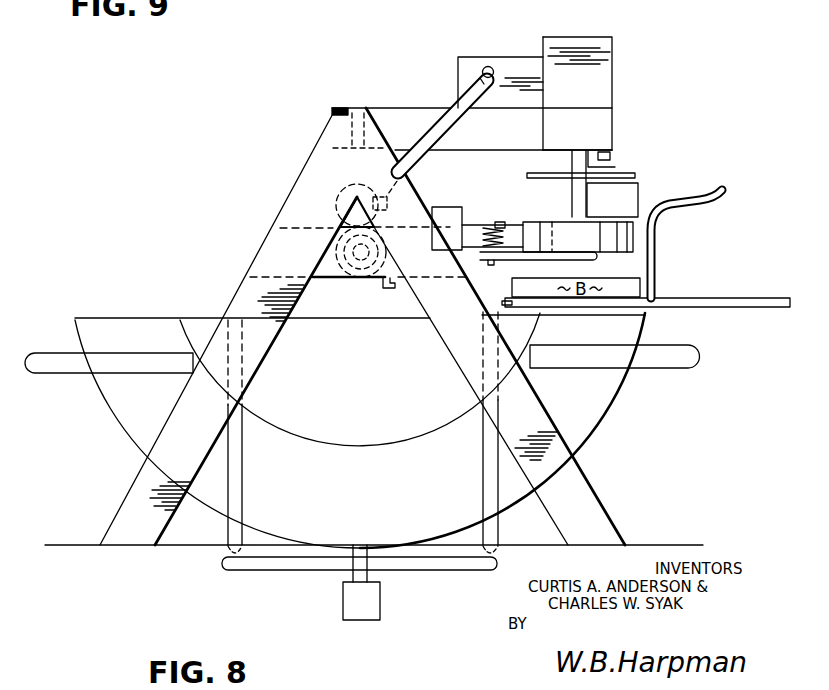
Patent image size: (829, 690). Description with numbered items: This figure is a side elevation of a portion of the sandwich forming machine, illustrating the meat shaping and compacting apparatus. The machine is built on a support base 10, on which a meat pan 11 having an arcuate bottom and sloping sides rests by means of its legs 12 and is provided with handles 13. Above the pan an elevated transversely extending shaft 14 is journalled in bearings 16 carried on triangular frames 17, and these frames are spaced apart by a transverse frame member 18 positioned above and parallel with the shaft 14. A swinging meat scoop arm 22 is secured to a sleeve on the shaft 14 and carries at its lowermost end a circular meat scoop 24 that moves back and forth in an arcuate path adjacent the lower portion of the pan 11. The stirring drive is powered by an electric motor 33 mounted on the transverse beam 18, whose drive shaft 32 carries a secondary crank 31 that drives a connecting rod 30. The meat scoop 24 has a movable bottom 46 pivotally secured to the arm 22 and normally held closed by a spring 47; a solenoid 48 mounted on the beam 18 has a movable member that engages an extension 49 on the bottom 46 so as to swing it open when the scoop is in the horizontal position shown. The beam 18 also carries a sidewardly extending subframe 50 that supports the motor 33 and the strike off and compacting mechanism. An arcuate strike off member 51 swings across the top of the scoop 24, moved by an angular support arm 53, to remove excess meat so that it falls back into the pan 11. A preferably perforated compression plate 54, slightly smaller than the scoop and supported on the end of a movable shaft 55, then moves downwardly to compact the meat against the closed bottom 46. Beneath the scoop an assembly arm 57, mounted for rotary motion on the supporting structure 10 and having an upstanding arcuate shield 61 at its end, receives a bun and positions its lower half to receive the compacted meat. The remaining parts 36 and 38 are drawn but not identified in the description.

The support base 10 is at (108, 548).
The meat pan 11 is at (387, 415).
The legs 12 is at (244, 505).
The handles 13 is at (58, 362).
The shaft 14 is at (336, 250).
The bearings 16 is at (326, 274).
The triangular frames 17 is at (146, 472).
The transverse frame member 18 is at (332, 111).
The arm 22 is at (476, 277).
The meat scoop 24 is at (556, 232).
The connecting rod 30 is at (462, 122).
The secondary crank 31 is at (480, 80).
The drive shaft 32 is at (488, 66).
The electric motor 33 is at (524, 58).
The motor 36 is at (602, 37).
The pivot pin 38 is at (335, 192).
The movable bottom portion 46 is at (597, 255).
The spring 47 is at (497, 230).
The solenoid 48 is at (440, 212).
The extension 49 is at (478, 224).
The subframe 50 is at (573, 146).
The strike off member 51 is at (630, 192).
The angular support arm 53 is at (610, 152).
The compression plate 54 is at (632, 176).
The movable shaft 55 is at (570, 161).
The assembly arm 57 is at (714, 300).
The arcuate shield 61 is at (657, 256).